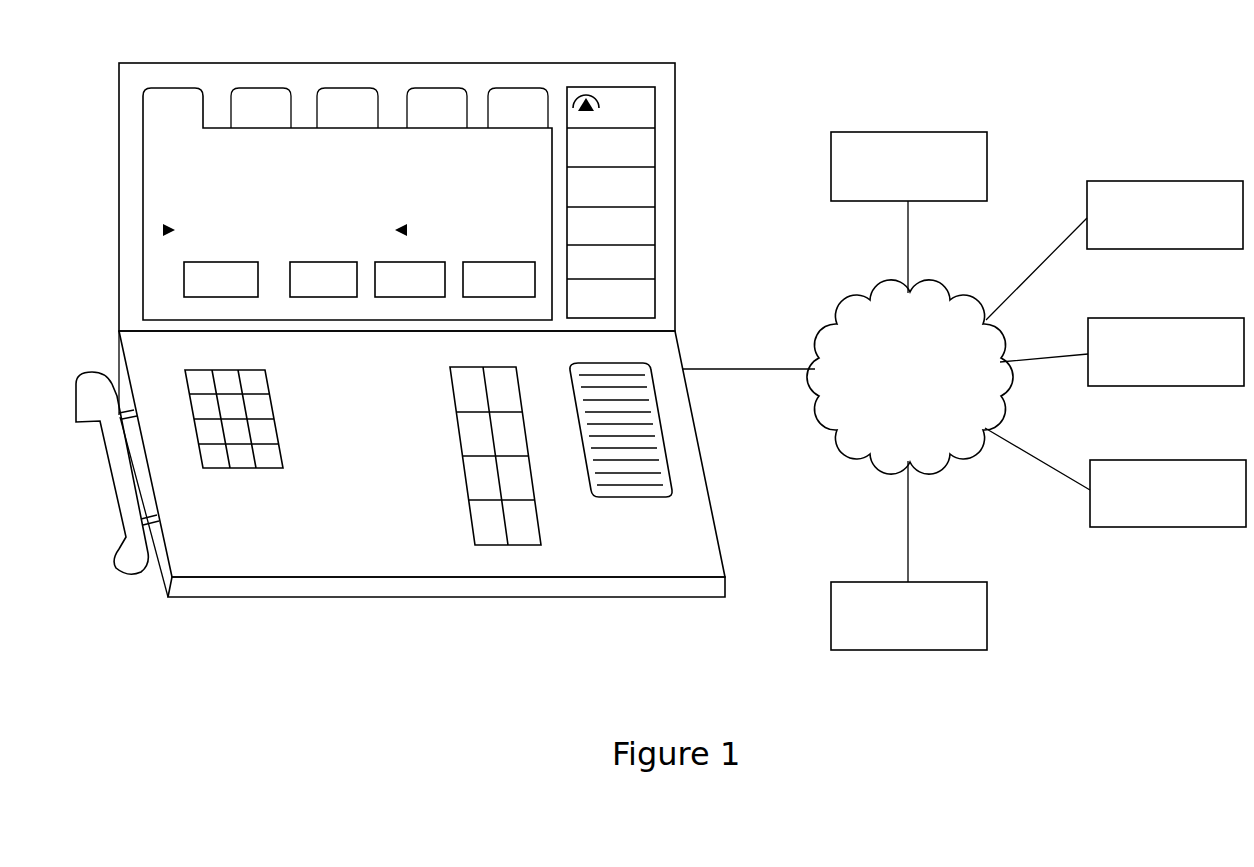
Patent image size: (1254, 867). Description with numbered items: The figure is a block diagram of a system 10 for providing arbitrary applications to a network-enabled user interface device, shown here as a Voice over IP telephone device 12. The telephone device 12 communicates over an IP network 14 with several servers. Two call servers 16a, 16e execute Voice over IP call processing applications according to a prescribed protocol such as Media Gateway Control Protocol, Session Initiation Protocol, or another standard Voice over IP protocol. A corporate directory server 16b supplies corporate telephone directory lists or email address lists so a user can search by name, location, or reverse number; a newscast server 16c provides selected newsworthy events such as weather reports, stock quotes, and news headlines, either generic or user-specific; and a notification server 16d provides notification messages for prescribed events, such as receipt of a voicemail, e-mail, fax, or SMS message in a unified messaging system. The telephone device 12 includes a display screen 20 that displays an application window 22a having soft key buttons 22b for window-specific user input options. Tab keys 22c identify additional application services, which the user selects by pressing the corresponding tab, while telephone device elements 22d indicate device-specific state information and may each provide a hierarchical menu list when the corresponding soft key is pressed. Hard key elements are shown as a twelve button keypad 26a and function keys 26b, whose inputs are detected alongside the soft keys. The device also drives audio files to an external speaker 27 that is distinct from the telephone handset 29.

The system 10 is at (385, 714).
The Voice over IP telephone device 12 is at (268, 634).
The IP network 14 is at (897, 429).
The call server 16a is at (918, 132).
The corporate directory server 16b is at (1168, 181).
The newscast server 16c is at (1168, 318).
The notification server 16d is at (1168, 460).
The call server 16e is at (988, 612).
The display screen 20 is at (130, 76).
The application window 22a is at (155, 133).
The soft key buttons 22b is at (505, 297).
The tab keys 22c is at (428, 88).
The telephone device elements 22d is at (652, 104).
The twelve button keypad 26a is at (233, 481).
The function keys 26b is at (441, 422).
The external speaker 27 is at (620, 500).
The telephone handset 29 is at (128, 560).